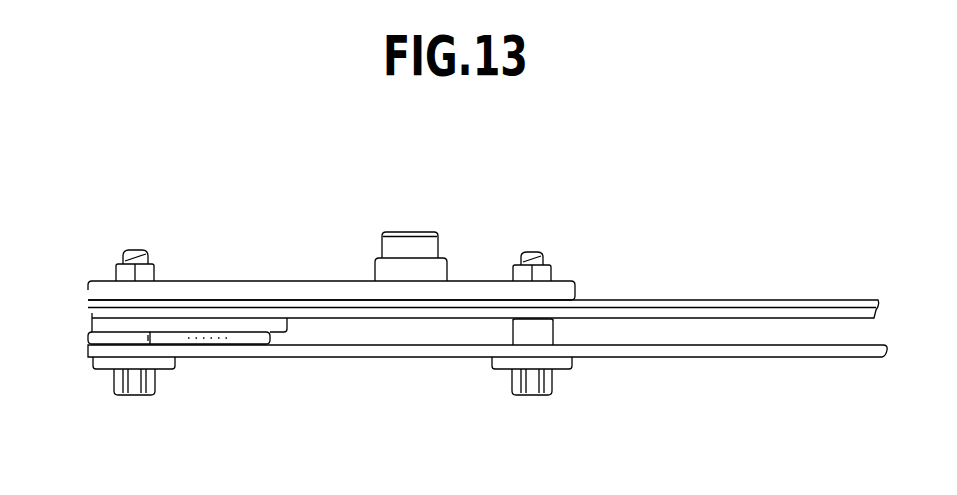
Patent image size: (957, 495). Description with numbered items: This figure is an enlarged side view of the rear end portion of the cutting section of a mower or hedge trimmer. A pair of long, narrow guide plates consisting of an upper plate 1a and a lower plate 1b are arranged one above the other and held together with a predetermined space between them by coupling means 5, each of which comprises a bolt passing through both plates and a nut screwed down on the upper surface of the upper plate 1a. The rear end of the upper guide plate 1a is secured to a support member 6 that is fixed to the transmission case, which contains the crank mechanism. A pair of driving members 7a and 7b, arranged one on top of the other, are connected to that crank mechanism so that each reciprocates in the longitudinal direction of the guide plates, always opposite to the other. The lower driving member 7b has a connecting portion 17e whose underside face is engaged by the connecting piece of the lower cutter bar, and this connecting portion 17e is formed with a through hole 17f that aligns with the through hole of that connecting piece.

The upper plate 1a is at (772, 307).
The lower plate 1b is at (750, 350).
The coupling means 5 is at (560, 270).
The support member 6 is at (294, 281).
The driving member 7a is at (107, 323).
The driving member 7b is at (112, 337).
The connecting portion 17e is at (253, 337).
The through hole 17f is at (228, 335).